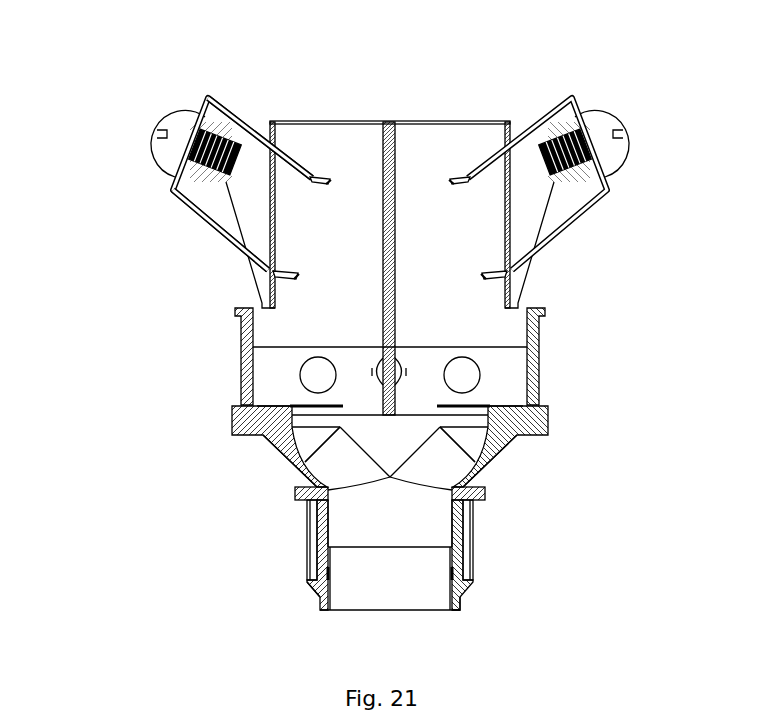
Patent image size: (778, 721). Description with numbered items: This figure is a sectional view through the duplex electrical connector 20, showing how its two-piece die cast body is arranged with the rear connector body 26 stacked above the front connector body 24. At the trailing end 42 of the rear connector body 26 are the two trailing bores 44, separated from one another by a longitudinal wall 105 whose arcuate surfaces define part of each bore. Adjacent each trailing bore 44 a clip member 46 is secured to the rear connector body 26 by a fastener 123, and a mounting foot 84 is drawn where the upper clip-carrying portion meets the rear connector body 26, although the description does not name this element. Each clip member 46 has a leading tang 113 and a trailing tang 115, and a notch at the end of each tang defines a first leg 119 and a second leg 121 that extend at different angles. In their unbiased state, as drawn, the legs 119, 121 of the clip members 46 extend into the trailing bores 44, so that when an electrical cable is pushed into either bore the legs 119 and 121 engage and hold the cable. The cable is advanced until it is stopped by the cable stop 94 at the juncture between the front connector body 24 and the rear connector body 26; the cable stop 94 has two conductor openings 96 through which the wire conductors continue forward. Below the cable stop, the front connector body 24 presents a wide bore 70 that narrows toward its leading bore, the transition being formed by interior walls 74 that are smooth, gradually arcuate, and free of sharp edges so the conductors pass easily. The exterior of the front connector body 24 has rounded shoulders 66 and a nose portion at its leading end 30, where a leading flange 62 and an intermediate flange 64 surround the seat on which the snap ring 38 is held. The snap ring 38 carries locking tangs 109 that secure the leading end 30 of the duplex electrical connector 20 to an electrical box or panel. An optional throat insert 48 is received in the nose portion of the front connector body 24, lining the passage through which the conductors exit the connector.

The duplex electrical connector 20 is at (82, 116).
The fastener 123 is at (170, 117).
The trailing tang 115 is at (258, 126).
The trailing end 42 is at (415, 120).
The trailing bores 44 is at (325, 151).
The second leg 121 is at (330, 179).
The first leg 119 is at (328, 185).
The clip member 46 is at (173, 192).
The leading tang 113 is at (210, 228).
The mounting foot 84 is at (258, 295).
The longitudinal wall 105 is at (396, 256).
The rear connector body 26 is at (533, 360).
The front connector body 24 is at (549, 417).
The cable stop 94 is at (270, 410).
The conductor openings 96 is at (367, 412).
The wide bore 70 is at (401, 448).
The interior walls 74 is at (305, 456).
The rounded shoulders 66 is at (493, 458).
The intermediate flange 64 is at (295, 493).
The locking tangs 109 is at (475, 518).
The leading flange 62 is at (307, 582).
The snap ring 38 is at (475, 555).
The throat insert 48 is at (390, 611).
The leading end 30 is at (463, 597).